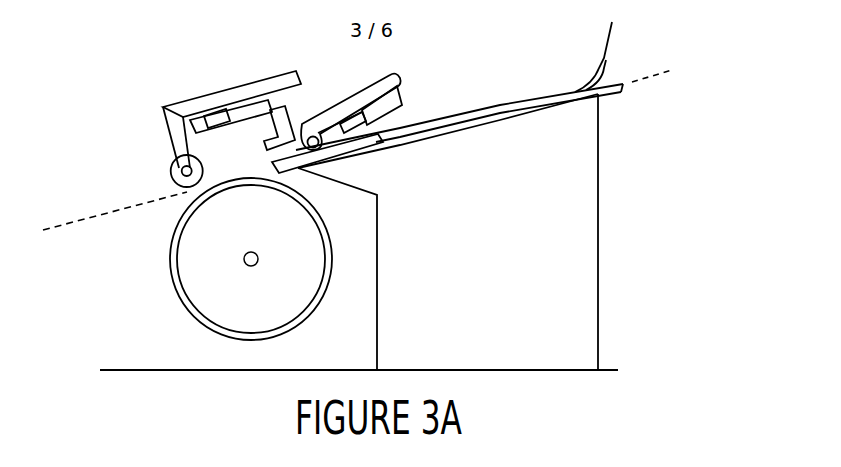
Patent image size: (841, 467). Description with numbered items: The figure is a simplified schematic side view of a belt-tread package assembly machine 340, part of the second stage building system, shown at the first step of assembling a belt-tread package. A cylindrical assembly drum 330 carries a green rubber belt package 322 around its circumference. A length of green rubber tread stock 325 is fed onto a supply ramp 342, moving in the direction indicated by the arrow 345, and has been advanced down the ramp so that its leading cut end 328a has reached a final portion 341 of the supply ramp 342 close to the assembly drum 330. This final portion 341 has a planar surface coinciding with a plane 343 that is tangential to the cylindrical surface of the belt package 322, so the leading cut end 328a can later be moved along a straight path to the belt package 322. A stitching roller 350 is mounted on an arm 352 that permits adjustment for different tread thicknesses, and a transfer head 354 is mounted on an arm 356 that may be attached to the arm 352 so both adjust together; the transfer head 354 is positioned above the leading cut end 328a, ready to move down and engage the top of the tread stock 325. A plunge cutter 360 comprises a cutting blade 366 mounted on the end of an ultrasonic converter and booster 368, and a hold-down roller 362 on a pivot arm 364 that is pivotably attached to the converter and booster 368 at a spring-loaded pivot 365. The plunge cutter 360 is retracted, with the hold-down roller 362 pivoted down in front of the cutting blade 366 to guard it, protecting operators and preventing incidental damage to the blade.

The belt package 322 is at (228, 337).
The tread stock 325 is at (510, 98).
The leading cut end 328a is at (206, 187).
The assembly drum 330 is at (193, 292).
The belt-tread package assembly machine 340 is at (660, 252).
The final portion of the supply ramp 341 is at (298, 174).
The supply ramp 342 is at (505, 117).
The plane 343 is at (37, 232).
The arrow 345 is at (607, 50).
The stitching roller 350 is at (170, 173).
The arm 352 is at (173, 98).
The transfer head 354 is at (266, 148).
The arm 356 is at (227, 118).
The plunge cutter 360 is at (390, 84).
The hold-down roller 362 is at (320, 140).
The pivot arm 364 is at (322, 112).
The pivot 365 is at (400, 78).
The cutting blade 366 is at (390, 143).
The ultrasonic converter and booster 368 is at (383, 115).